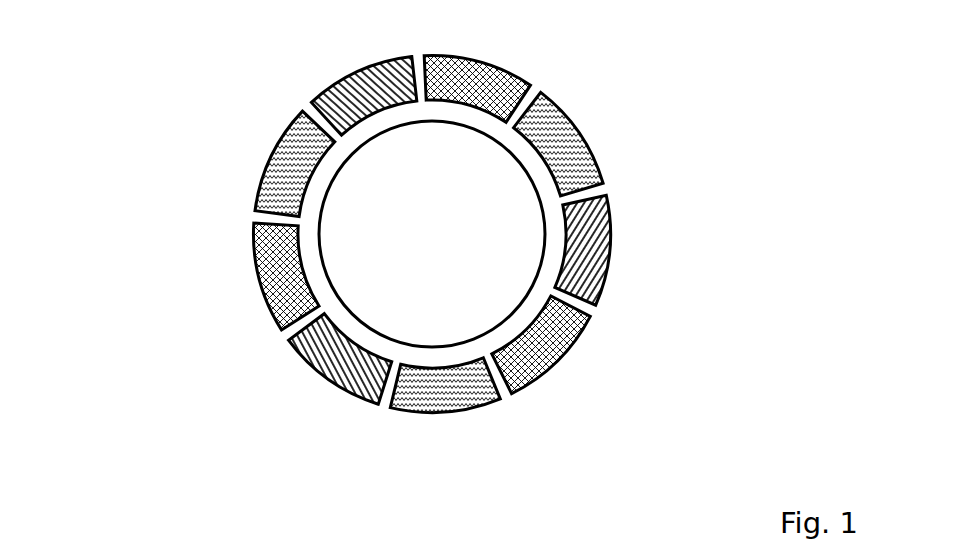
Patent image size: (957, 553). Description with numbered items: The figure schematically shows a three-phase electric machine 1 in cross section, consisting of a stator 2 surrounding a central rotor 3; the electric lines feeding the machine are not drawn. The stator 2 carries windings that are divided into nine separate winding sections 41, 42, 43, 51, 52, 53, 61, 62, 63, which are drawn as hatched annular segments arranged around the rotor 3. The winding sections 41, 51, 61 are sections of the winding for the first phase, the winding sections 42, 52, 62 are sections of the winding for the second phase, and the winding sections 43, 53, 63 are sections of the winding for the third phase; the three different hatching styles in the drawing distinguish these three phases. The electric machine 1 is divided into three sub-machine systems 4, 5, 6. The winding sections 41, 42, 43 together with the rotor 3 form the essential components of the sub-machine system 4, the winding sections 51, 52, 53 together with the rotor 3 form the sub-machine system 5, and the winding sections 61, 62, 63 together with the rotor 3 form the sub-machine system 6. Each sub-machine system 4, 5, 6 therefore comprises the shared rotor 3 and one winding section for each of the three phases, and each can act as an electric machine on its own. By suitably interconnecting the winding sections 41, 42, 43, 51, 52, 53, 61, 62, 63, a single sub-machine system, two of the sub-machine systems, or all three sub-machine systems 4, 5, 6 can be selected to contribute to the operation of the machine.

The electric machine 1 is at (127, 242).
The stator 2 is at (598, 123).
The rotor 3 is at (441, 252).
The sub-machine system 4 is at (675, 332).
The sub-machine system 5 is at (413, 209).
The sub-machine system 6 is at (488, 219).
The winding section 41 is at (285, 136).
The winding section 42 is at (442, 415).
The winding section 43 is at (600, 168).
The winding section 51 is at (270, 292).
The winding section 52 is at (562, 355).
The winding section 53 is at (497, 67).
The winding section 61 is at (332, 385).
The winding section 62 is at (610, 250).
The winding section 63 is at (357, 72).